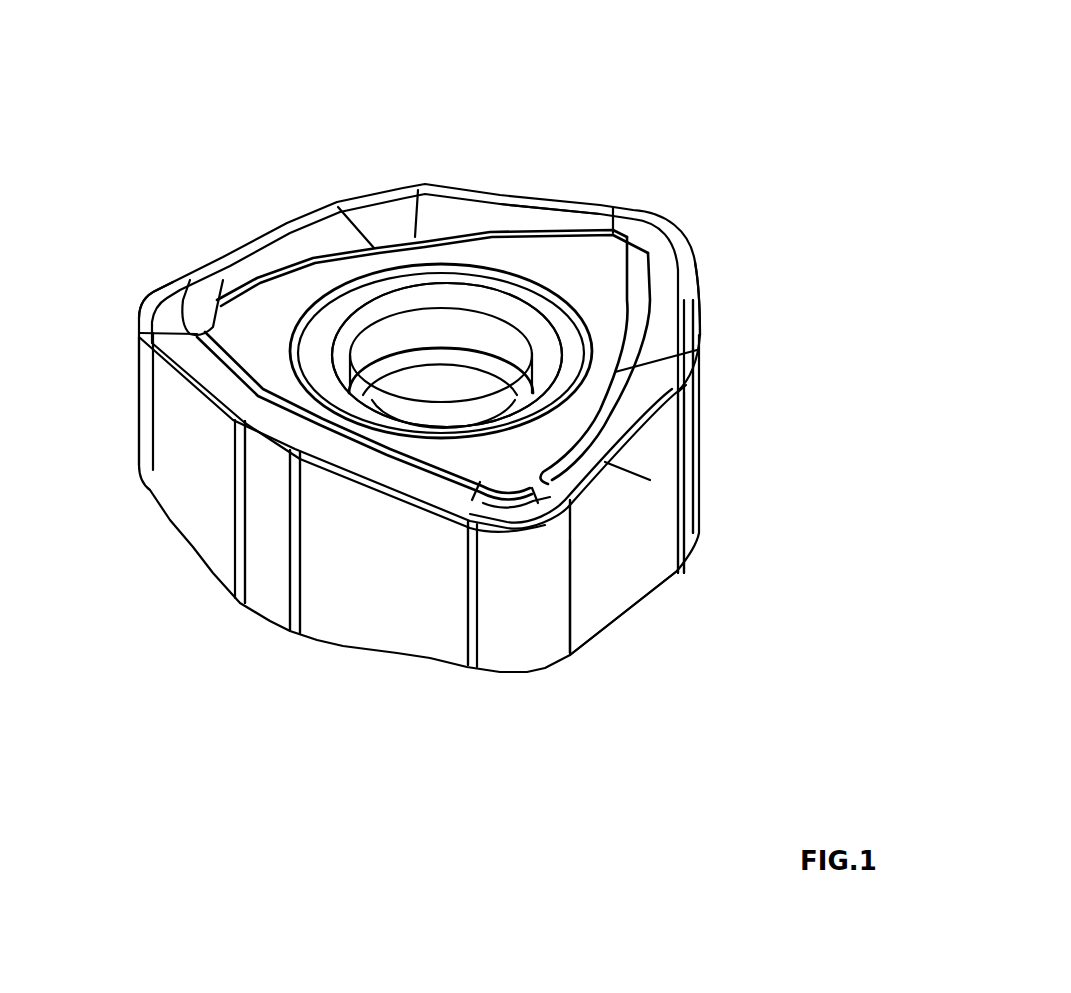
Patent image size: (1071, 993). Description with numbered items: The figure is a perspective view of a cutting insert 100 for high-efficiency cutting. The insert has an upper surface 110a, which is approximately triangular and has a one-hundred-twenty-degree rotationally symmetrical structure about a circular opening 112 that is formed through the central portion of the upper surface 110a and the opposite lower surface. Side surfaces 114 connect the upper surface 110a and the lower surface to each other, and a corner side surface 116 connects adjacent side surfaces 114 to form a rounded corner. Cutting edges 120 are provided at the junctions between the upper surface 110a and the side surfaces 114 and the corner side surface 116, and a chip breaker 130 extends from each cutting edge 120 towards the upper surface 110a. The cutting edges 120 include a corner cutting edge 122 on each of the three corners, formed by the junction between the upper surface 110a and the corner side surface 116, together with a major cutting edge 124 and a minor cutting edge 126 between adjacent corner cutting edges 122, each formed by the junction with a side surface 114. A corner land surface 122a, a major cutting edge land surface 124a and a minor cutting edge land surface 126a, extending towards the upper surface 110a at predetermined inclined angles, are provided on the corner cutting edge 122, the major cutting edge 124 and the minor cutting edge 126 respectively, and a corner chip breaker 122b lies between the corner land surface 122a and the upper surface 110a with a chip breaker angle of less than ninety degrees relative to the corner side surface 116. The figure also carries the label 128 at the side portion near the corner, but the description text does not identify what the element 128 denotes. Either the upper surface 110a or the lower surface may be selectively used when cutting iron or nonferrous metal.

The cutting insert 100 is at (719, 171).
The chip breaker 130 is at (330, 233).
The upper surface 110a is at (510, 255).
The circular opening 112 is at (523, 322).
The side surface 114 is at (199, 499).
The corner side surface 116 is at (535, 632).
The cutting edge 120 is at (838, 318).
The corner cutting edge 122 is at (555, 525).
The corner land surface 122a is at (490, 527).
The corner chip breaker 122b is at (530, 527).
The major cutting edge 124 is at (690, 300).
The major cutting edge land surface 124a is at (378, 448).
The minor cutting edge 126 is at (607, 390).
The minor cutting edge land surface 126a is at (283, 437).
The connecting surface 128 is at (697, 350).